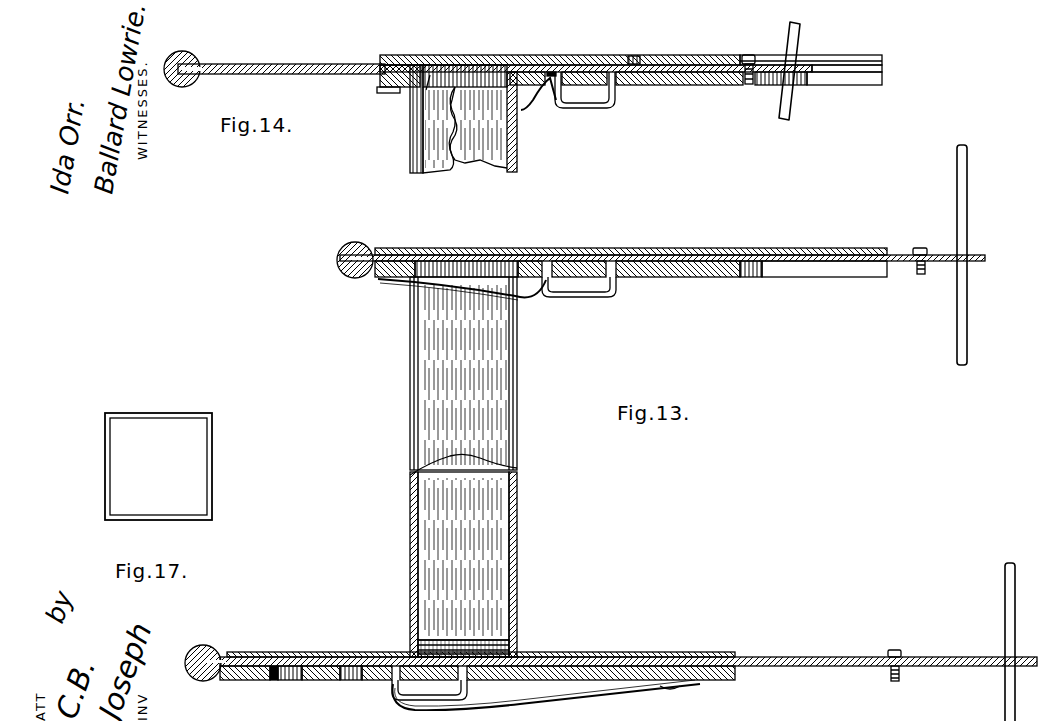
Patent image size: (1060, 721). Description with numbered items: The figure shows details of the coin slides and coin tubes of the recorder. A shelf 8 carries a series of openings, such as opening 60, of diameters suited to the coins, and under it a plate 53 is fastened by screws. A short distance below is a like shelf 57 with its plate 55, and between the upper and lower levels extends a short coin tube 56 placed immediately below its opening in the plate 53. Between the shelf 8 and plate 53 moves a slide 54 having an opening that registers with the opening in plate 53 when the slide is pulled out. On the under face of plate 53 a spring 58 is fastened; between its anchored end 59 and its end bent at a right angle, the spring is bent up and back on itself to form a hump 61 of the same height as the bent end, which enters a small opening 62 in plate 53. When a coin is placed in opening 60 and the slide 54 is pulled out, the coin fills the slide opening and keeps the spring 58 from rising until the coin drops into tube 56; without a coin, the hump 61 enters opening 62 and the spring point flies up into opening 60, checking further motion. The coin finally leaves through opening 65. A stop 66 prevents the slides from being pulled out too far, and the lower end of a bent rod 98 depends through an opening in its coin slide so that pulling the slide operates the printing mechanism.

In FIG. 14, the shelf 8 is at (631, 63).
In FIG. 13, the shelf 8 is at (631, 253).
In FIG. 14, the plate 53 is at (666, 86).
In FIG. 13, the plate 53 is at (676, 278).
In FIG. 13, the slide 54 is at (648, 260).
In FIG. 13, the plate 55 is at (254, 680).
In FIG. 14, the coin tube 56 is at (476, 119).
In FIG. 13, the coin tube 56 is at (477, 459).
In FIG. 17, the coin tube 56 is at (158, 466).
In FIG. 13, the shelf 57 is at (318, 654).
In FIG. 14, the spring 58 is at (594, 109).
In FIG. 13, the spring 58 is at (572, 298).
In FIG. 14, the anchored end 59 is at (385, 93).
In FIG. 13, the anchored end 59 is at (385, 283).
In FIG. 14, the opening 60 is at (640, 57).
In FIG. 14, the hump 61 is at (551, 72).
In FIG. 14, the opening 62 is at (539, 98).
In FIG. 14, the opening 65 is at (426, 90).
In FIG. 13, the opening 65 is at (304, 680).
In FIG. 14, the stop 66 is at (753, 60).
In FIG. 13, the stop 66 is at (909, 455).
In FIG. 14, the rod 98 is at (800, 38).
In FIG. 13, the rod 98 is at (997, 433).